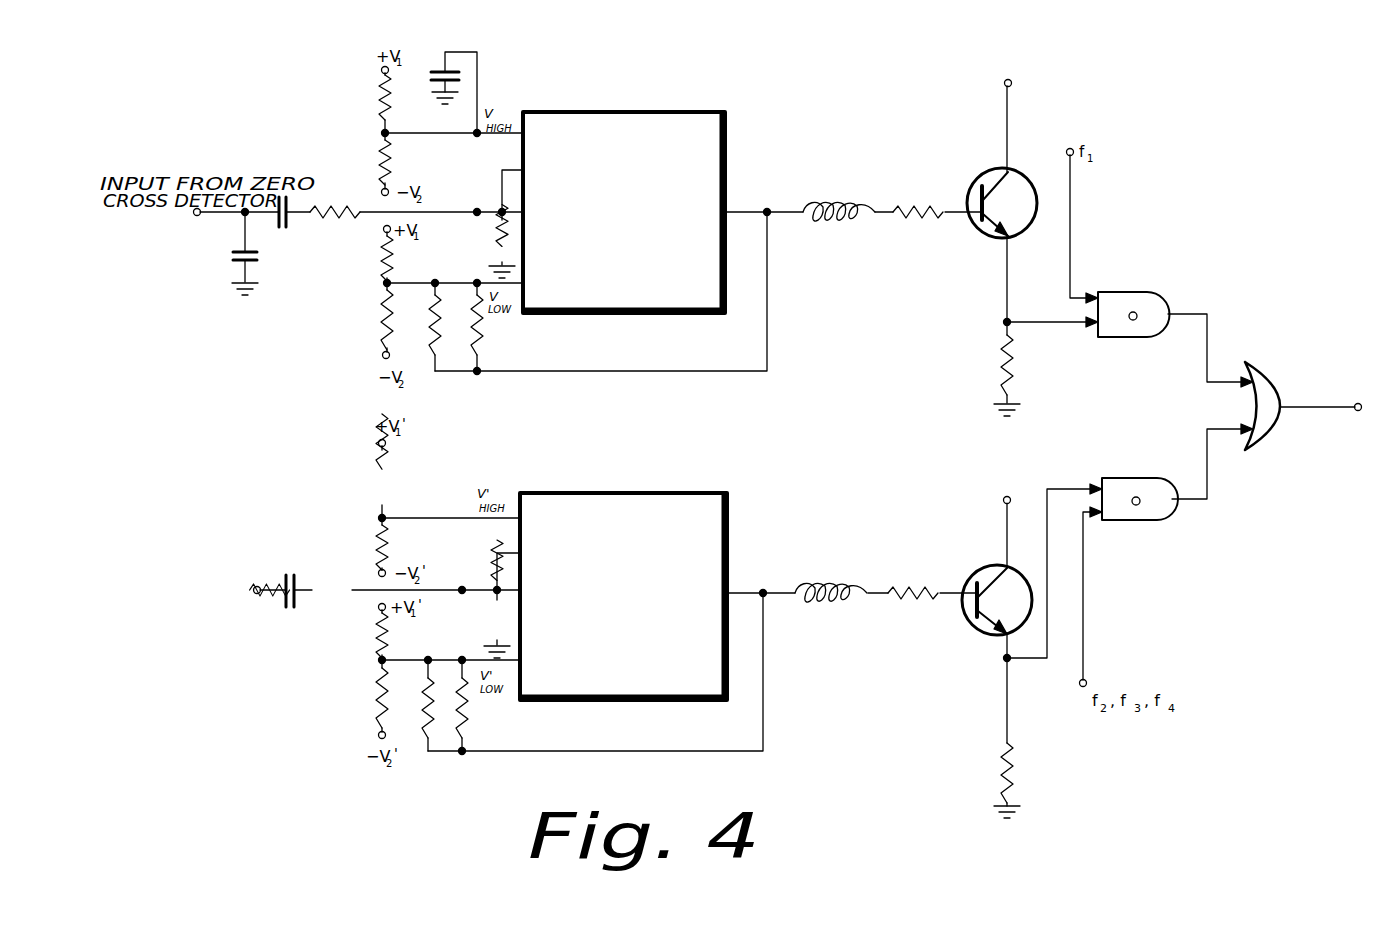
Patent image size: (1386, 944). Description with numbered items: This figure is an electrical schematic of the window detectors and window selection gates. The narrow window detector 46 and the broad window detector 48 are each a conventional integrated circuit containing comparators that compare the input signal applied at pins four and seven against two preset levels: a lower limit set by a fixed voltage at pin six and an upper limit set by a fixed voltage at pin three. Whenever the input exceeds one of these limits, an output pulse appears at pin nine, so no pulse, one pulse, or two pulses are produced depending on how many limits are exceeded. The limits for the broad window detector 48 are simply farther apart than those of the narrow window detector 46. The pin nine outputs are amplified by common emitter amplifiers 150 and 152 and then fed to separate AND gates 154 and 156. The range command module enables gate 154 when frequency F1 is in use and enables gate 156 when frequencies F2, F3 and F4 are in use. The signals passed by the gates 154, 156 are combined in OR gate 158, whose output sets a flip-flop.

The narrow window detector 46 is at (730, 158).
The broad window detector 48 is at (713, 524).
The common emitter amplifier 150 is at (990, 170).
The common emitter amplifier 152 is at (973, 636).
The AND gate 154 is at (1148, 301).
The AND gate 156 is at (1176, 471).
The OR gate 158 is at (1275, 384).